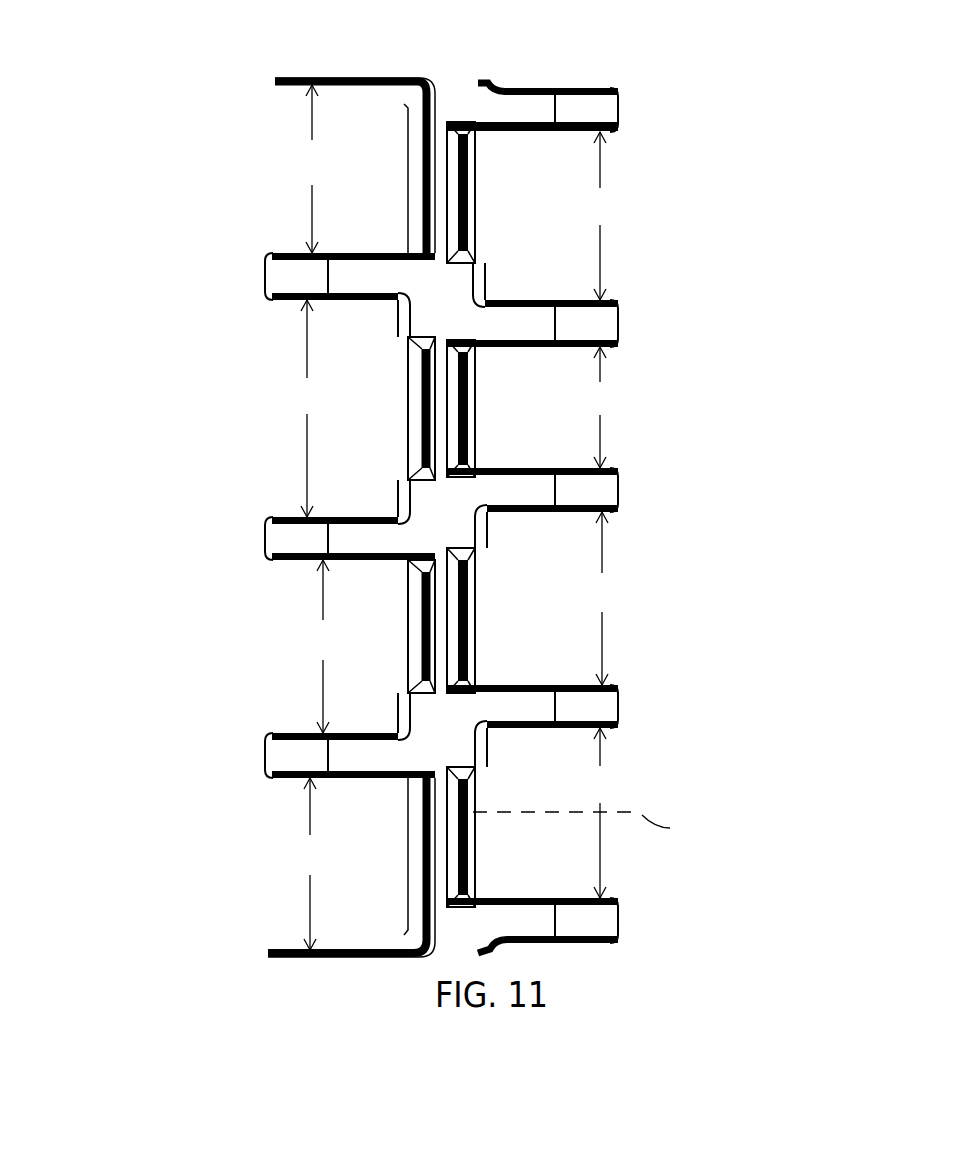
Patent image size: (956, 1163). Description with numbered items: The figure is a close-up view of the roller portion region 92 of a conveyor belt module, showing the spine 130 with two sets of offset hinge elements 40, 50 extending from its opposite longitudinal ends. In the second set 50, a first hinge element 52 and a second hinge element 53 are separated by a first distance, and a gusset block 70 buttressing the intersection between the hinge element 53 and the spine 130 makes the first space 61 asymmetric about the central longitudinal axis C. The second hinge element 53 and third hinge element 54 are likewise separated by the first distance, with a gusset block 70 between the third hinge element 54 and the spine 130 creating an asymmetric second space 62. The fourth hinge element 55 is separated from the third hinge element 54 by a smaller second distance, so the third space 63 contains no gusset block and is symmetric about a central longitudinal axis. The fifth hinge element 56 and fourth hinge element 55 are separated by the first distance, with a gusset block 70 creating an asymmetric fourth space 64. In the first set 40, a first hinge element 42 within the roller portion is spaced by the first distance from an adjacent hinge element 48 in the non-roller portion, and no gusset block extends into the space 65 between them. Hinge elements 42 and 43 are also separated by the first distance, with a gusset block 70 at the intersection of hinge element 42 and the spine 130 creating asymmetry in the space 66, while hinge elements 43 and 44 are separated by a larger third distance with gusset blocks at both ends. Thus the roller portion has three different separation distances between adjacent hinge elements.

The first set of hinge elements 40 is at (205, 970).
The second set of hinge elements 50 is at (705, 962).
The roller portion region 92 is at (218, 110).
The hinge element 44 is at (266, 278).
The hinge element 43 is at (266, 545).
The first hinge element 42 is at (266, 765).
The adjacent hinge element 48 is at (268, 952).
The fifth hinge element 56 is at (596, 110).
The fourth hinge element 55 is at (603, 318).
The third hinge element 54 is at (612, 488).
The second hinge element 53 is at (615, 700).
The first hinge element 52 is at (617, 935).
The first space 61 is at (515, 894).
The second space 62 is at (552, 612).
The third space 63 is at (548, 414).
The fourth space 64 is at (563, 195).
The space 65 is at (383, 834).
The space 66 is at (397, 605).
The gusset block 70 is at (410, 338).
The spine 130 is at (417, 863).